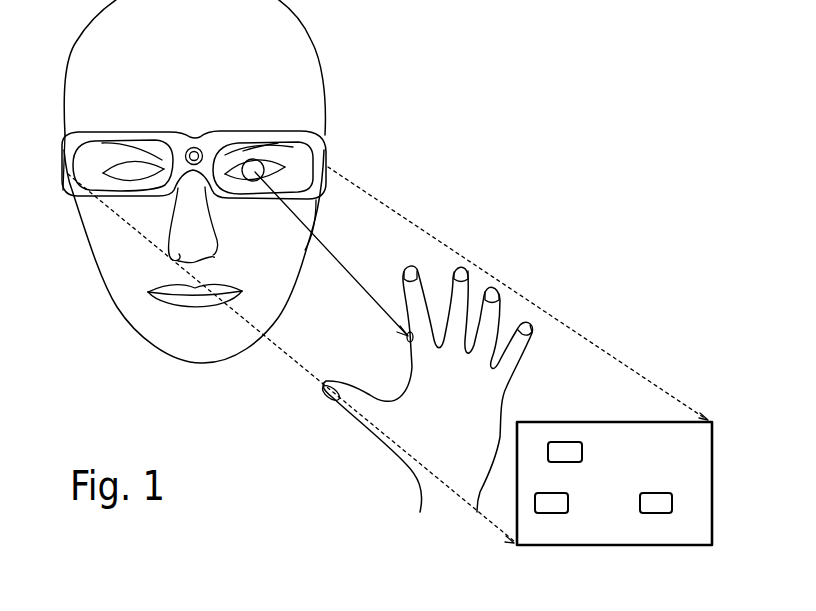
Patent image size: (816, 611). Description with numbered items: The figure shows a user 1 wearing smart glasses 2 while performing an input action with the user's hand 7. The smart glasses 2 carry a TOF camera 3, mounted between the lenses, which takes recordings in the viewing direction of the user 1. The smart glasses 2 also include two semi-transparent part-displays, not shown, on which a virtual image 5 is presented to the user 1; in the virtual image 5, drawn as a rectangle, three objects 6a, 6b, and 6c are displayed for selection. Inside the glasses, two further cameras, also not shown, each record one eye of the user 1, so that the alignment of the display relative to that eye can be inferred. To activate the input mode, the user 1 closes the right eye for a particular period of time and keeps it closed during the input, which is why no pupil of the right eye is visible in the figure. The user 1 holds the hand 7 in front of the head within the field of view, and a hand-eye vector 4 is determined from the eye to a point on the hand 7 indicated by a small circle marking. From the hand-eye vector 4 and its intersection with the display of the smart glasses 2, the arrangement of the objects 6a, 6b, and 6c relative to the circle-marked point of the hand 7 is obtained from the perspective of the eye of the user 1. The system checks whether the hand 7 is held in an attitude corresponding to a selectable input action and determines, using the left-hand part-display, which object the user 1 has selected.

The user 1 is at (293, 67).
The smart glasses 2 is at (307, 130).
The TOF camera 3 is at (194, 147).
The hand-eye vector 4 is at (337, 254).
The virtual image 5 is at (615, 418).
The object 6a is at (547, 458).
The object 6b is at (550, 500).
The object 6c is at (660, 502).
The user's hand 7 is at (458, 417).